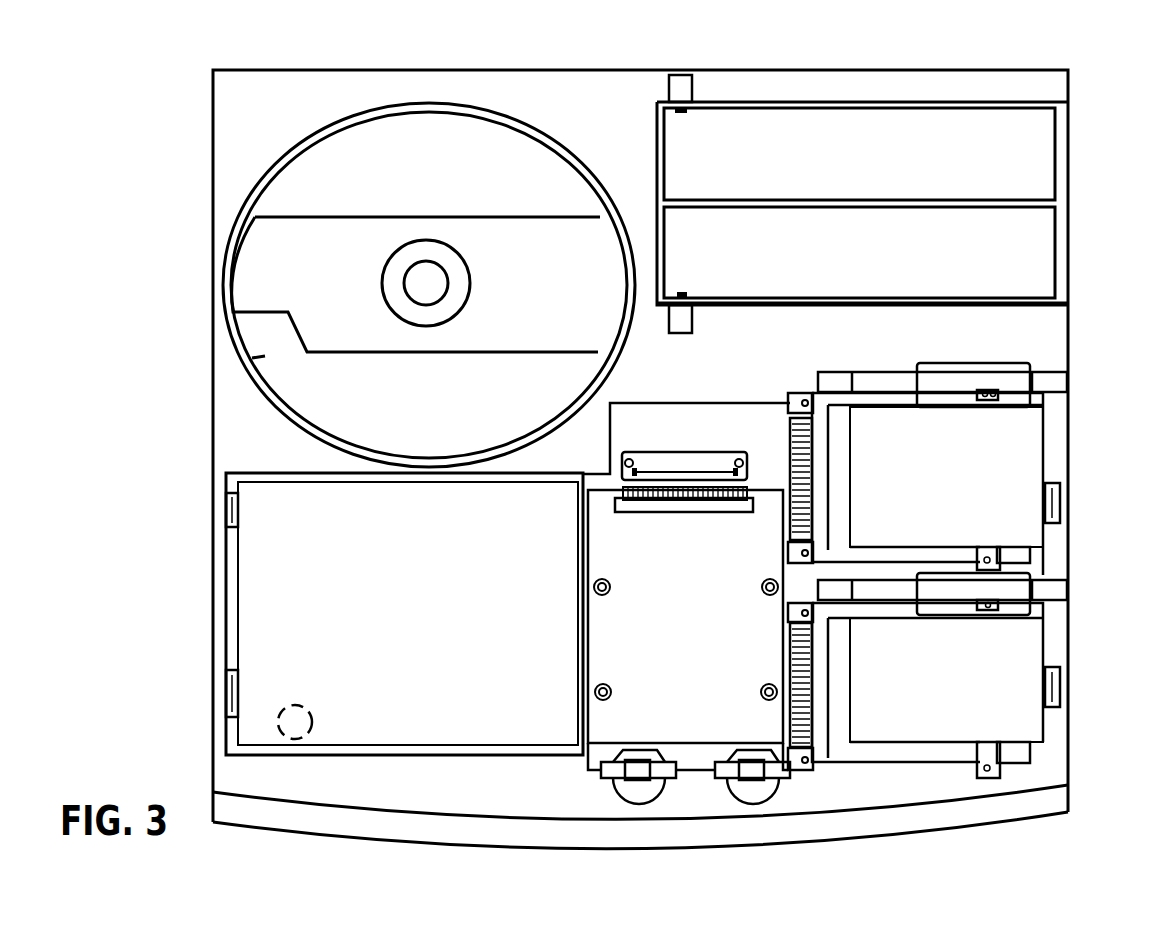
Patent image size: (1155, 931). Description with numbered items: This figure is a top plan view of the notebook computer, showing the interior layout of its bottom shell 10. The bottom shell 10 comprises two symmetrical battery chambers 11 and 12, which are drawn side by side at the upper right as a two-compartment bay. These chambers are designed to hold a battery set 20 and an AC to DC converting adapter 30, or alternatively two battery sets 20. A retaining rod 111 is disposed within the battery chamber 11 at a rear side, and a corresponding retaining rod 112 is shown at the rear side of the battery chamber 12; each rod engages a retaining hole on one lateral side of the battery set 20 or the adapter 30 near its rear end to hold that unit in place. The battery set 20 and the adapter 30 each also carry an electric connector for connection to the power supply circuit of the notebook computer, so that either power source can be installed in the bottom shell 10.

The bottom shell 10 is at (1015, 343).
The battery chamber 11 is at (908, 105).
The retaining rod 111 is at (681, 111).
The second engaging portion of holder 112 is at (681, 296).
The battery chamber 12 is at (802, 303).
The battery set 20 is at (1033, 170).
The AC to DC converting adapter 30 is at (1027, 268).